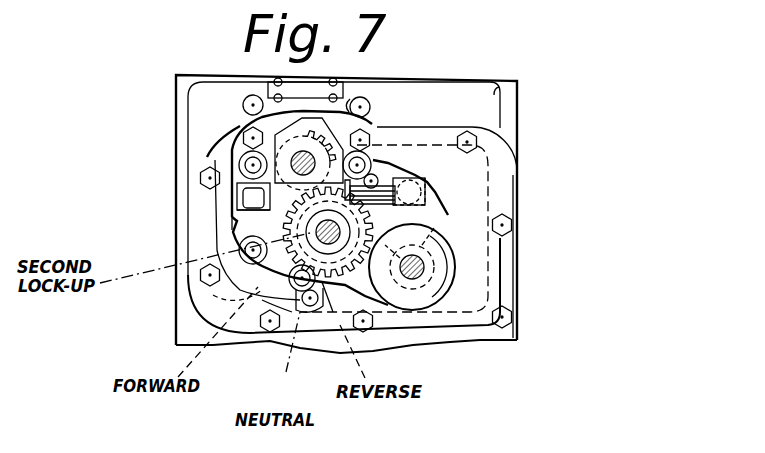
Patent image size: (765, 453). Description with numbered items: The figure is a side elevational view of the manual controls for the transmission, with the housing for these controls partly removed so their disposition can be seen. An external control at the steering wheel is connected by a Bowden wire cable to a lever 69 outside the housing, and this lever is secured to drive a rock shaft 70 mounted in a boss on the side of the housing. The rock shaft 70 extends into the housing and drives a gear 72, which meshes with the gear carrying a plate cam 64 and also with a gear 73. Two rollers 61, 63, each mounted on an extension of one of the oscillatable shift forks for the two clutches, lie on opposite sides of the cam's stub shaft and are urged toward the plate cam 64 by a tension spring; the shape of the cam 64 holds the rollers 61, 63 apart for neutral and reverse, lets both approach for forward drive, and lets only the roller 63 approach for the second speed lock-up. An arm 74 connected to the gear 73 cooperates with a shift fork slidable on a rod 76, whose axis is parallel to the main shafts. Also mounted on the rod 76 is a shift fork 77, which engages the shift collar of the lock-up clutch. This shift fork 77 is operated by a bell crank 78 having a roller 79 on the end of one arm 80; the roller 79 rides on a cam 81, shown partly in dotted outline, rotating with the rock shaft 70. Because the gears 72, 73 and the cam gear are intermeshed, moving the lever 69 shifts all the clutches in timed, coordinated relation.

The roller 61 is at (240, 162).
The roller 63 is at (368, 150).
The plate cam 64 is at (355, 112).
The lever 69 is at (303, 306).
The rock shaft 70 is at (335, 230).
The gear 72 is at (309, 163).
The gear 73 is at (428, 311).
The arm 74 is at (423, 218).
The rod 76 is at (440, 188).
The shift fork 77 is at (245, 233).
The bell crank 78 is at (233, 216).
The roller 79 is at (300, 311).
The arm 80 is at (300, 283).
The cam 81 is at (323, 290).